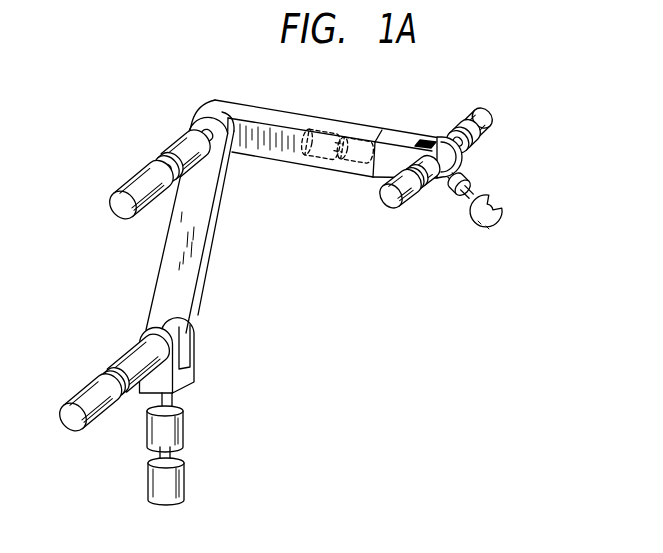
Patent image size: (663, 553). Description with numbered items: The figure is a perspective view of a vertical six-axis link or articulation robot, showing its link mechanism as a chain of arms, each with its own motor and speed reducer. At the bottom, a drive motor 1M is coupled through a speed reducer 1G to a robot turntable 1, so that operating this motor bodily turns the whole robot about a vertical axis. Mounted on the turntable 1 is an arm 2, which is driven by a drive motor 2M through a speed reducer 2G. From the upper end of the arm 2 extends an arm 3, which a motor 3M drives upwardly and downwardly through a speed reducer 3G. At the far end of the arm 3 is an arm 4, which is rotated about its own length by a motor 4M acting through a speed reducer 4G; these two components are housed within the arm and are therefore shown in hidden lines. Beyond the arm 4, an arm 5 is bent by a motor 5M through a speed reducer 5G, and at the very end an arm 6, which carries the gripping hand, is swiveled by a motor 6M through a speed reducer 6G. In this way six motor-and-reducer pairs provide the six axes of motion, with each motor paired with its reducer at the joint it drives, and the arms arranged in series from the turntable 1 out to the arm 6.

The robot turntable 1 is at (193, 368).
The speed reducer 1G is at (184, 428).
The drive motor 1M is at (187, 478).
The arm 2 is at (170, 255).
The speed reducer 2G is at (120, 353).
The drive motor 2M is at (80, 383).
The arm 3 is at (291, 116).
The speed reducer 3G is at (172, 148).
The motor 3M is at (132, 177).
The arm 4 is at (396, 137).
The motor 4M is at (312, 164).
The speed reducer 4G is at (350, 172).
The arm 5 is at (464, 174).
The speed reducer 5G is at (420, 186).
The motor 5M is at (408, 208).
The arm 6 is at (503, 203).
The speed reducer 6G is at (452, 118).
The motor 6M is at (484, 112).